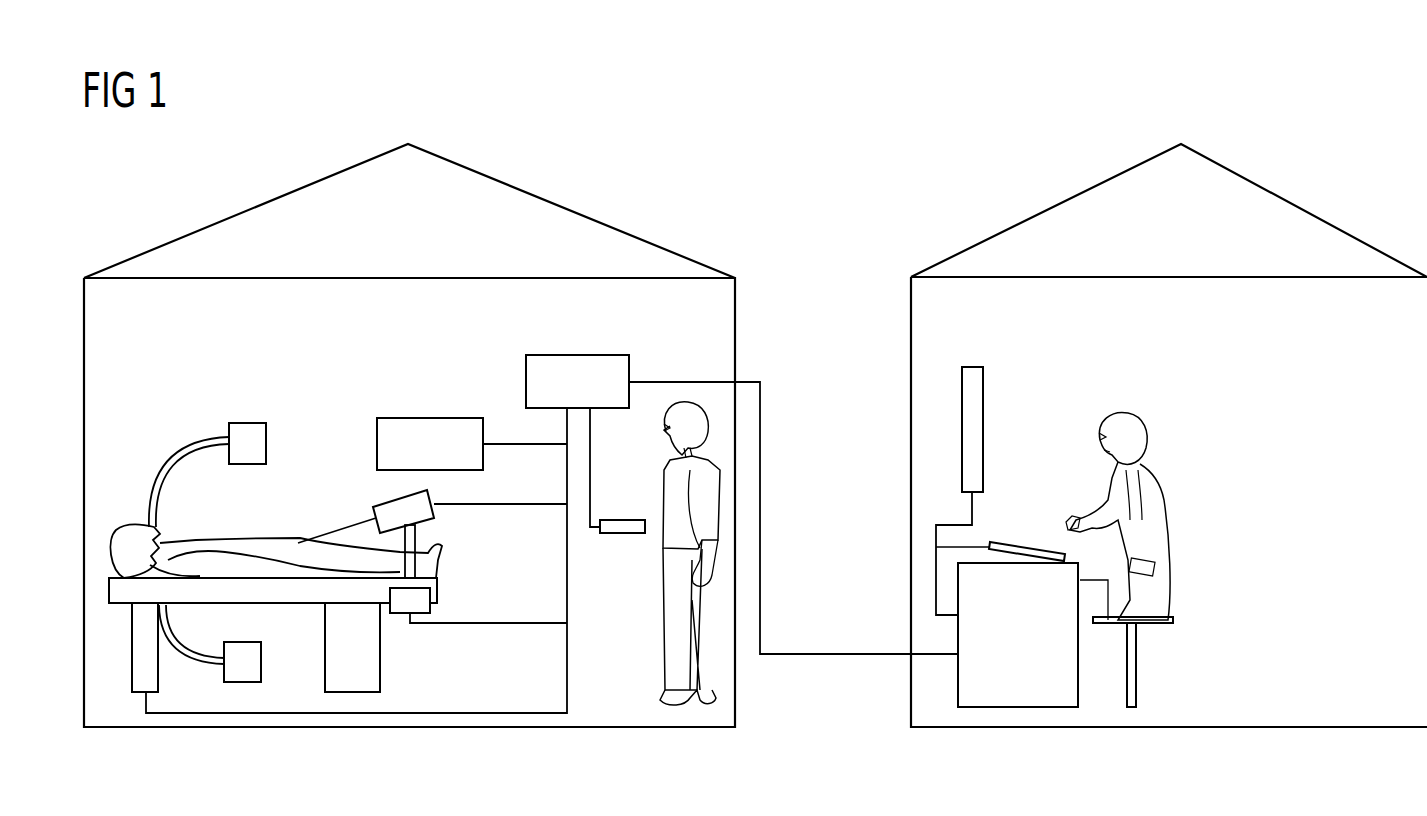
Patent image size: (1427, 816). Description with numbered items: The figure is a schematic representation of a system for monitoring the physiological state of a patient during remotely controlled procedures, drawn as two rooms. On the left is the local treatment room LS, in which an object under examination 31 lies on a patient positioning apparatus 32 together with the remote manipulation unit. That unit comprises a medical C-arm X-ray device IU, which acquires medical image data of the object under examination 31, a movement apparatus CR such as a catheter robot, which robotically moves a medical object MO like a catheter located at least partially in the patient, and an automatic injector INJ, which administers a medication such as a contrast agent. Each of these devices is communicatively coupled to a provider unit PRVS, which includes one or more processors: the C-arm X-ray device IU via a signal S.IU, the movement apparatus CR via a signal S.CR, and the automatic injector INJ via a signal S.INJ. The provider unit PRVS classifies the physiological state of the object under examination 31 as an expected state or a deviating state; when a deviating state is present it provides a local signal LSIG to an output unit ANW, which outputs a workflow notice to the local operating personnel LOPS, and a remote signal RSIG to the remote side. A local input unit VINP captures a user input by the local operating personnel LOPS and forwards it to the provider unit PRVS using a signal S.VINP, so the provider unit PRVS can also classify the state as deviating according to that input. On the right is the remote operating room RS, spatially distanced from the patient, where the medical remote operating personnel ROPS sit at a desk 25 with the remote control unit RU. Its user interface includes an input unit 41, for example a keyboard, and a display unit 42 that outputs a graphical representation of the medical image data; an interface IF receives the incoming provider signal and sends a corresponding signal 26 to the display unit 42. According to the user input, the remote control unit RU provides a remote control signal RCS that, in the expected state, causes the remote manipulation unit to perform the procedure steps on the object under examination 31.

The local treatment room LS is at (573, 210).
The remote operating room RS is at (1045, 207).
The patient positioning apparatus 32 is at (120, 602).
The object under examination 31 is at (254, 537).
The medical C-arm X-ray device IU is at (214, 438).
The signal S.IU is at (279, 712).
The output unit ANW is at (433, 417).
The local signal LSIG is at (505, 442).
The provider unit PRVS is at (580, 354).
The movement apparatus CR is at (392, 497).
The medical object MO is at (336, 528).
The signal S.CR is at (511, 506).
The local input unit VINP is at (625, 519).
The signal S.VINP is at (584, 510).
The automatic injector INJ is at (398, 615).
The signal S.INJ is at (487, 625).
The local operating personnel LOPS is at (668, 627).
The remote control signal RCS is at (793, 518).
The remote signal RSIG is at (822, 652).
The display unit 42 is at (972, 366).
The signal 26 is at (972, 508).
The desk 25 is at (965, 547).
The input unit 41 is at (1028, 544).
The interface IF is at (957, 678).
The remote control unit RU is at (1047, 384).
The medical remote operating personnel ROPS is at (1120, 412).